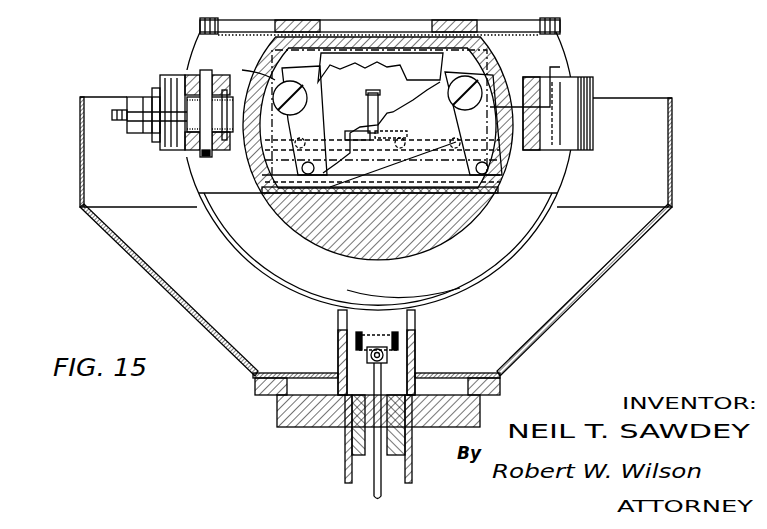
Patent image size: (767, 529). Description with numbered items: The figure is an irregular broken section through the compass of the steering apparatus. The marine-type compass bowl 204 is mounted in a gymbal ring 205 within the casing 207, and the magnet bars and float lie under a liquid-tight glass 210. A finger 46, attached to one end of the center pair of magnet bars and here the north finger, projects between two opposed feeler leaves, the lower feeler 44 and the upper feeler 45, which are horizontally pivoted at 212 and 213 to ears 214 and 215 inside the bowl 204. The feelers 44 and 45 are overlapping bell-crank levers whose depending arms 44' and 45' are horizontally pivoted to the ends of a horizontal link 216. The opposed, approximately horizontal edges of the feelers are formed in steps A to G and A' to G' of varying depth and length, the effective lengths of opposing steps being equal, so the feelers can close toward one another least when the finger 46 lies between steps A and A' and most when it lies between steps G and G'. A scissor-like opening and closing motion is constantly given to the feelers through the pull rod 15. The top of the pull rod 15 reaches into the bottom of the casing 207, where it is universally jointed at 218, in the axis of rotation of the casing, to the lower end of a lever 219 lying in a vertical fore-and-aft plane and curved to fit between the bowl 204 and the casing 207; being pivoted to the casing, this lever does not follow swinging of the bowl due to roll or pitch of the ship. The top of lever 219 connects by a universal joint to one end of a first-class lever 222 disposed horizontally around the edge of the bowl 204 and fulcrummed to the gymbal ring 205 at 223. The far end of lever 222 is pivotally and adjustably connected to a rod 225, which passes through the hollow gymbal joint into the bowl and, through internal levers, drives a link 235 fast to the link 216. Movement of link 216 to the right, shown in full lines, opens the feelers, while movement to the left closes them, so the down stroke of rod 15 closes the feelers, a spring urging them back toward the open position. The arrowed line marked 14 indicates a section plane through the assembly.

The section line / supporting column 14 is at (345, 456).
The pull rod 15 is at (371, 493).
The feeler leaf 44 is at (385, 127).
The depending arm 44' is at (489, 123).
The feeler leaf 45 is at (380, 73).
The depending arm 45' is at (304, 120).
The finger 46 is at (367, 96).
The bowl 204 is at (556, 52).
The gymbal ring 205 is at (588, 76).
The casing 207 is at (608, 281).
The liquid-tight glass 210 is at (420, 26).
The pivot 212 is at (462, 77).
The pivot 213 is at (300, 84).
The ear 214 is at (492, 78).
The ear 215 is at (246, 69).
The horizontal link 216 is at (437, 189).
The universal joint 218 is at (388, 356).
The lever 219 is at (398, 333).
The first-class lever 222 is at (146, 95).
The fulcrum 223 is at (206, 72).
The rod 225 is at (117, 108).
The link 235 is at (497, 186).